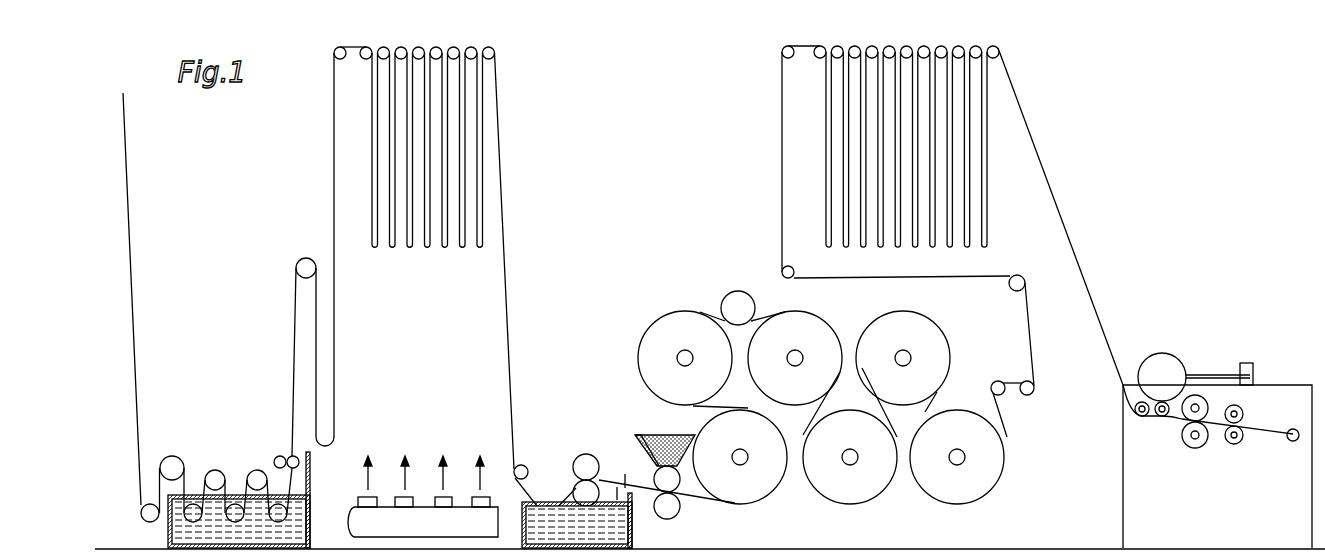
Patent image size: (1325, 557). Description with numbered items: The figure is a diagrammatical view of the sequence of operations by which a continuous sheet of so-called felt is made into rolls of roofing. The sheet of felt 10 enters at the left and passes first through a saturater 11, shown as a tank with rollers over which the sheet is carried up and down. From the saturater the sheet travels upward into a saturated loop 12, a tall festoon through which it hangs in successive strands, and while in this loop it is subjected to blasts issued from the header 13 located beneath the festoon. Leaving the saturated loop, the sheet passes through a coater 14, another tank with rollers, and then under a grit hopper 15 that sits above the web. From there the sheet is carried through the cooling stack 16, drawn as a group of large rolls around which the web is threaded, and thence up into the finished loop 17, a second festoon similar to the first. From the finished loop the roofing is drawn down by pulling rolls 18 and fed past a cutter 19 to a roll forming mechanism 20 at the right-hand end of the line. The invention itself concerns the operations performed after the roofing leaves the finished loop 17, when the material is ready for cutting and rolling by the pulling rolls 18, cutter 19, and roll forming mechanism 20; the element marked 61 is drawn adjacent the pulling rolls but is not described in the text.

The sheet of felt 10 is at (135, 291).
The saturater 11 is at (238, 403).
The saturated loop 12 is at (415, 258).
The header 13 is at (423, 485).
The coater 14 is at (624, 501).
The grit hopper 15 is at (660, 442).
The cooling stack 16 is at (836, 410).
The finished loop 17 is at (952, 216).
The pulling rolls 18 is at (1190, 446).
The cutter 19 is at (1232, 446).
The roll forming mechanism 20 is at (1293, 442).
The drum roller 61 is at (1162, 353).